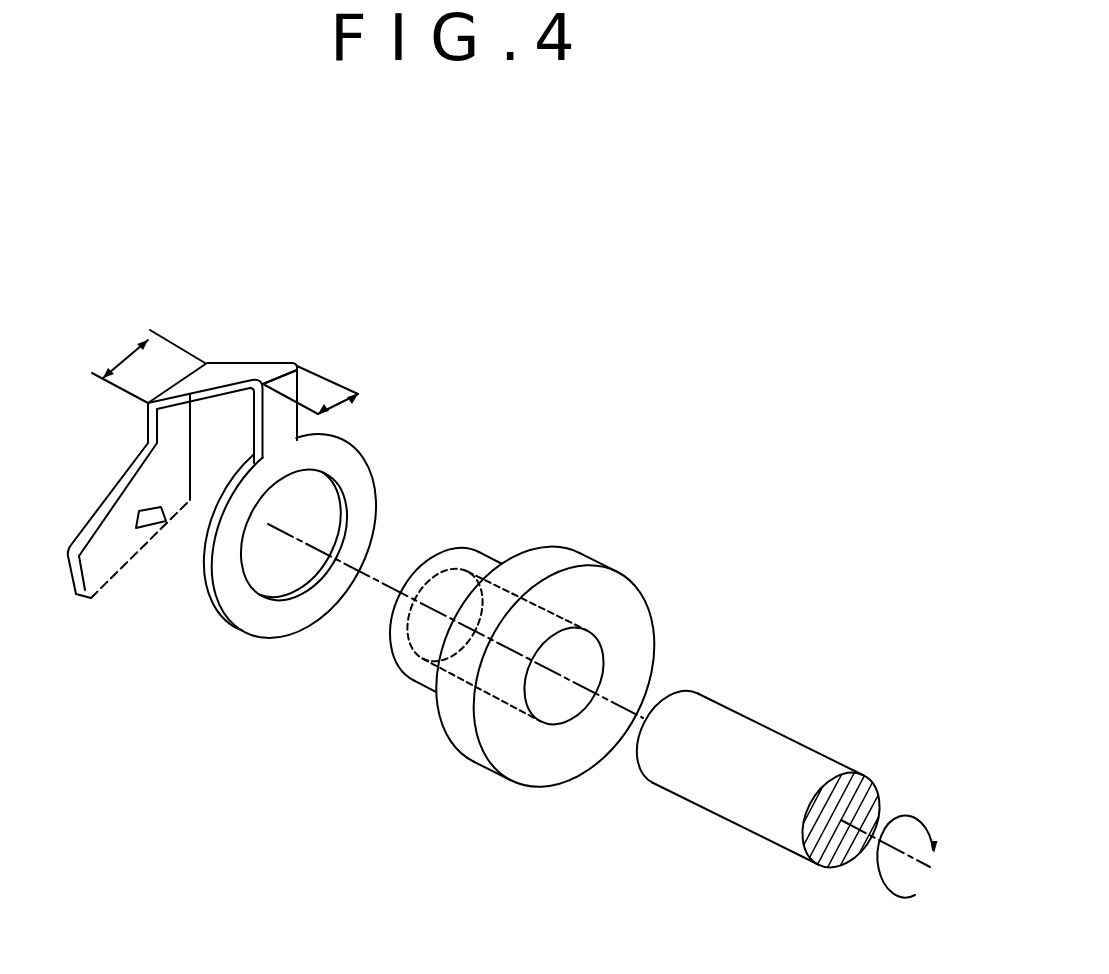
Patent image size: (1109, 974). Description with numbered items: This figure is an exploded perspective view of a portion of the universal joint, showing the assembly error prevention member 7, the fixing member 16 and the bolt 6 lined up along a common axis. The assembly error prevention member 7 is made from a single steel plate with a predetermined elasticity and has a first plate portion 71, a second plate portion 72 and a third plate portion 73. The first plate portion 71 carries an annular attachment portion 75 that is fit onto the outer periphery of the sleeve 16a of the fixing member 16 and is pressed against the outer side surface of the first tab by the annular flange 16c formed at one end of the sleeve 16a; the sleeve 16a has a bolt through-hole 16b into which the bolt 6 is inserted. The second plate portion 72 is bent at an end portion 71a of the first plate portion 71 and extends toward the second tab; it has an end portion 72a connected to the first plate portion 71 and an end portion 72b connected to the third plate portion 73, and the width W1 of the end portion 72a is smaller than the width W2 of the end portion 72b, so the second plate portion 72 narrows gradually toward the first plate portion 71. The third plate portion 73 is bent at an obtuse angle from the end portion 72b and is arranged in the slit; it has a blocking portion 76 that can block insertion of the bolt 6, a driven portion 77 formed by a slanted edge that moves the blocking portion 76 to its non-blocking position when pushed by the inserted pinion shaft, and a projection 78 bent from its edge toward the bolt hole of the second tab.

The assembly error prevention member 7 is at (227, 361).
The second plate portion 72 is at (247, 361).
The end portion 72a is at (267, 371).
The end portion 72b is at (187, 385).
The first plate portion 71 is at (298, 458).
The end portion 71a is at (288, 377).
The annular attachment portion 75 is at (285, 628).
The blocking portion 76 is at (120, 546).
The third plate portion 73 is at (103, 580).
The driven portion 77 is at (117, 581).
The projection 78 is at (165, 513).
The width of the first end portion W1 is at (337, 406).
The width of the second end portion W2 is at (138, 348).
The fixing member 16 is at (536, 758).
The sleeve 16a is at (407, 682).
The bolt through-hole 16b is at (498, 582).
The annular flange 16c is at (633, 608).
The bolt 6 is at (707, 794).